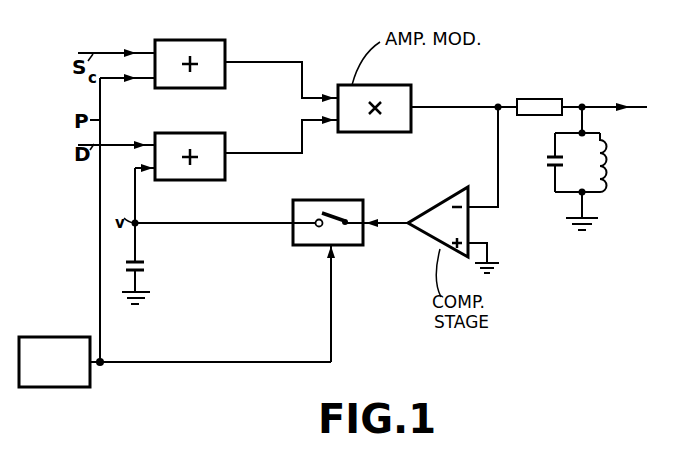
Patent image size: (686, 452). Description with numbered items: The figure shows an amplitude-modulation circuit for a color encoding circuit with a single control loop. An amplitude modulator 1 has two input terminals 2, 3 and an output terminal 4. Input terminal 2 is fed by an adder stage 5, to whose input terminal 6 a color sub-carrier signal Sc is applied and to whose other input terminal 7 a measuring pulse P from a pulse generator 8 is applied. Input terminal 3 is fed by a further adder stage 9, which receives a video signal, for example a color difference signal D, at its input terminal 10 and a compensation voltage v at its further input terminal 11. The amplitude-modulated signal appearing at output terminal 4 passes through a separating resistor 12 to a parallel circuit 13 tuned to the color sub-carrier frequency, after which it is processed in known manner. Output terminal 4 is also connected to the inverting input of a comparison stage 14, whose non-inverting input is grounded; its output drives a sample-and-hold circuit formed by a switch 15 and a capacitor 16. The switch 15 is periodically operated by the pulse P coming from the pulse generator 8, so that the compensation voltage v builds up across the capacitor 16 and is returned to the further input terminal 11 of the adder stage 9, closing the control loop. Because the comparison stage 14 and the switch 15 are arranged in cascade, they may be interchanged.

The amplitude modulator 1 is at (378, 85).
The input terminal 2 is at (336, 90).
The input terminal 3 is at (338, 127).
The output terminal 4 is at (413, 100).
The adder stage 5 is at (210, 40).
The input terminal 6 is at (154, 48).
The input terminal 7 is at (152, 82).
The pulse generator 8 is at (50, 337).
The further adder stage 9 is at (210, 133).
The input terminal 10 is at (154, 140).
The further input terminal 11 is at (154, 177).
The separating resistor 12 is at (528, 99).
The parallel circuit 13 is at (607, 177).
The comparison stage 14 is at (440, 203).
The switch 15 is at (350, 248).
The capacitor 16 is at (144, 265).